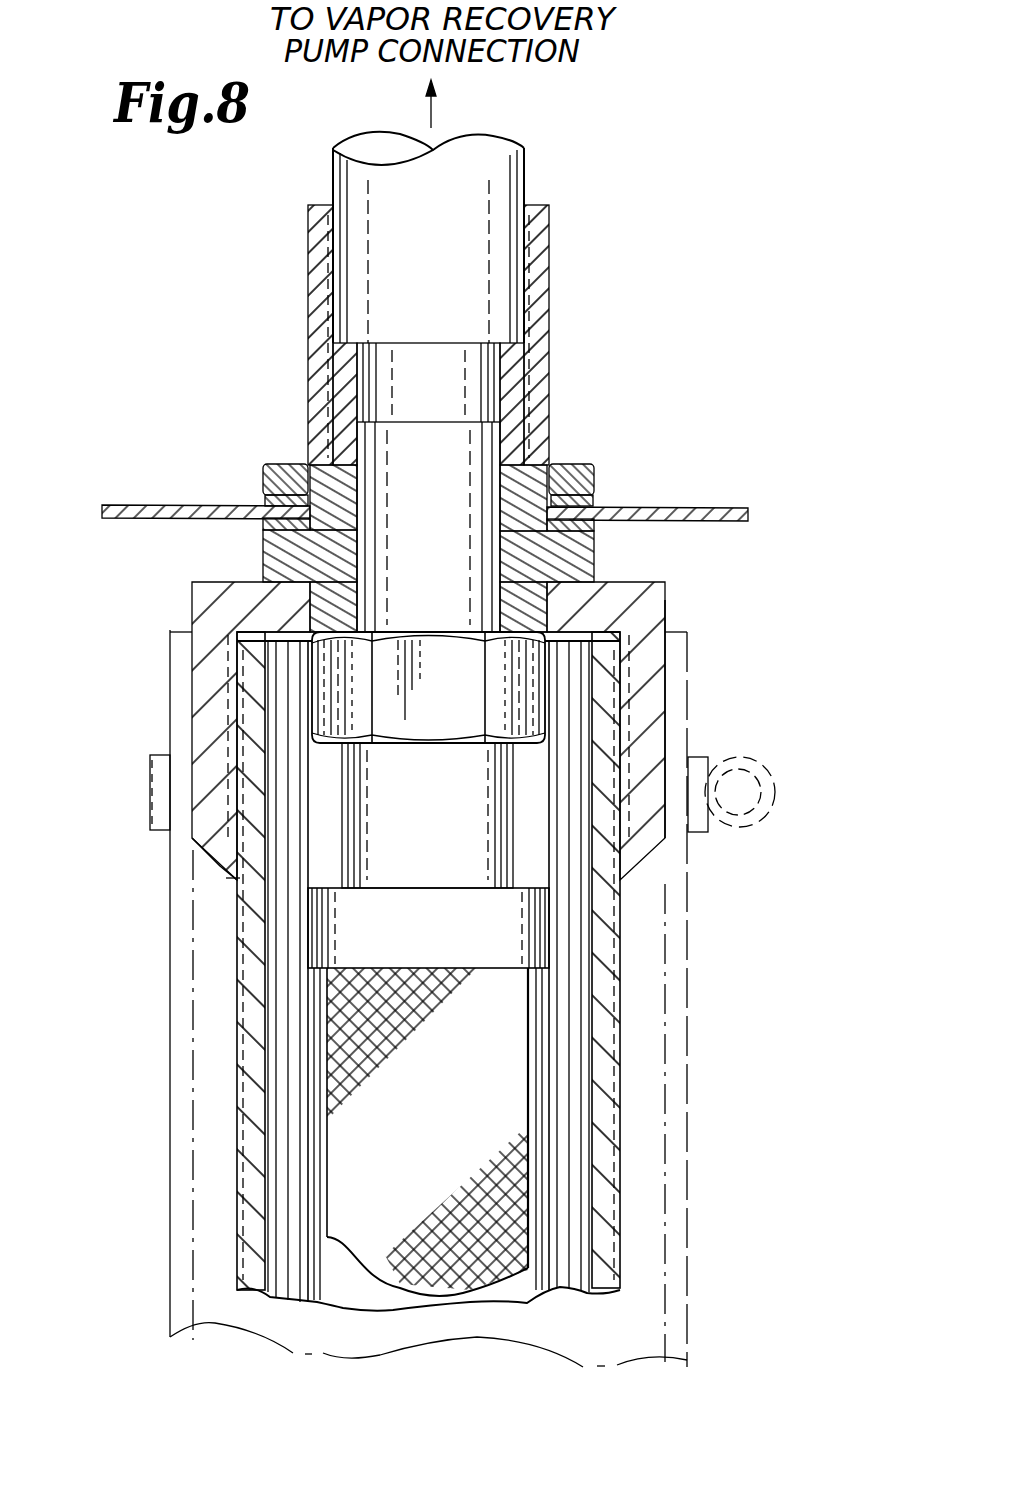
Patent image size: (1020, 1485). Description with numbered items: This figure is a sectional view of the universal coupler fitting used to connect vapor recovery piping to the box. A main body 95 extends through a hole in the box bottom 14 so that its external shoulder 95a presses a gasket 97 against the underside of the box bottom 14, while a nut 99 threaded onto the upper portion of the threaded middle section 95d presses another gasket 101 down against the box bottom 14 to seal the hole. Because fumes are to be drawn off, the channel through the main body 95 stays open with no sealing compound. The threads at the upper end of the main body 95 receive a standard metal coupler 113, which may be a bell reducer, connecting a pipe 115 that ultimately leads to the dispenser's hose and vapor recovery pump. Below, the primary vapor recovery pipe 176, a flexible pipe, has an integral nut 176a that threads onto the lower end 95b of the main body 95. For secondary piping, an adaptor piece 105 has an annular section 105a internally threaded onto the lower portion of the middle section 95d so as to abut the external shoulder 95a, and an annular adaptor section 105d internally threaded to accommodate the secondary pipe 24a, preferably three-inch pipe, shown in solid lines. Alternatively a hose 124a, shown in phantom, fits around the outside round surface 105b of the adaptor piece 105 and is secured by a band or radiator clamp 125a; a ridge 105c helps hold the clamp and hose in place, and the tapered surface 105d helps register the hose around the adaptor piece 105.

The box bottom 14 is at (133, 520).
The secondary pipe 24a is at (620, 1118).
The main body 95 is at (595, 560).
The external shoulder 95a is at (263, 551).
The lower end 95b is at (548, 717).
The threaded middle section 95d is at (313, 609).
The gasket 97 is at (595, 527).
The nut 99 is at (572, 465).
The gasket 101 is at (595, 506).
The adaptor piece 105 is at (667, 594).
The annular section 105a is at (238, 657).
The outside round surface 105b is at (667, 685).
The ridge 105c is at (192, 842).
The annular adaptor section 105d is at (220, 865).
The metal coupler 113 is at (550, 341).
The pipe 115 is at (525, 182).
The hose 124a is at (688, 948).
The band or radiator clamp 125a is at (705, 750).
The primary vapor recovery pipe 176 is at (528, 1192).
The integral nut 176a is at (312, 722).